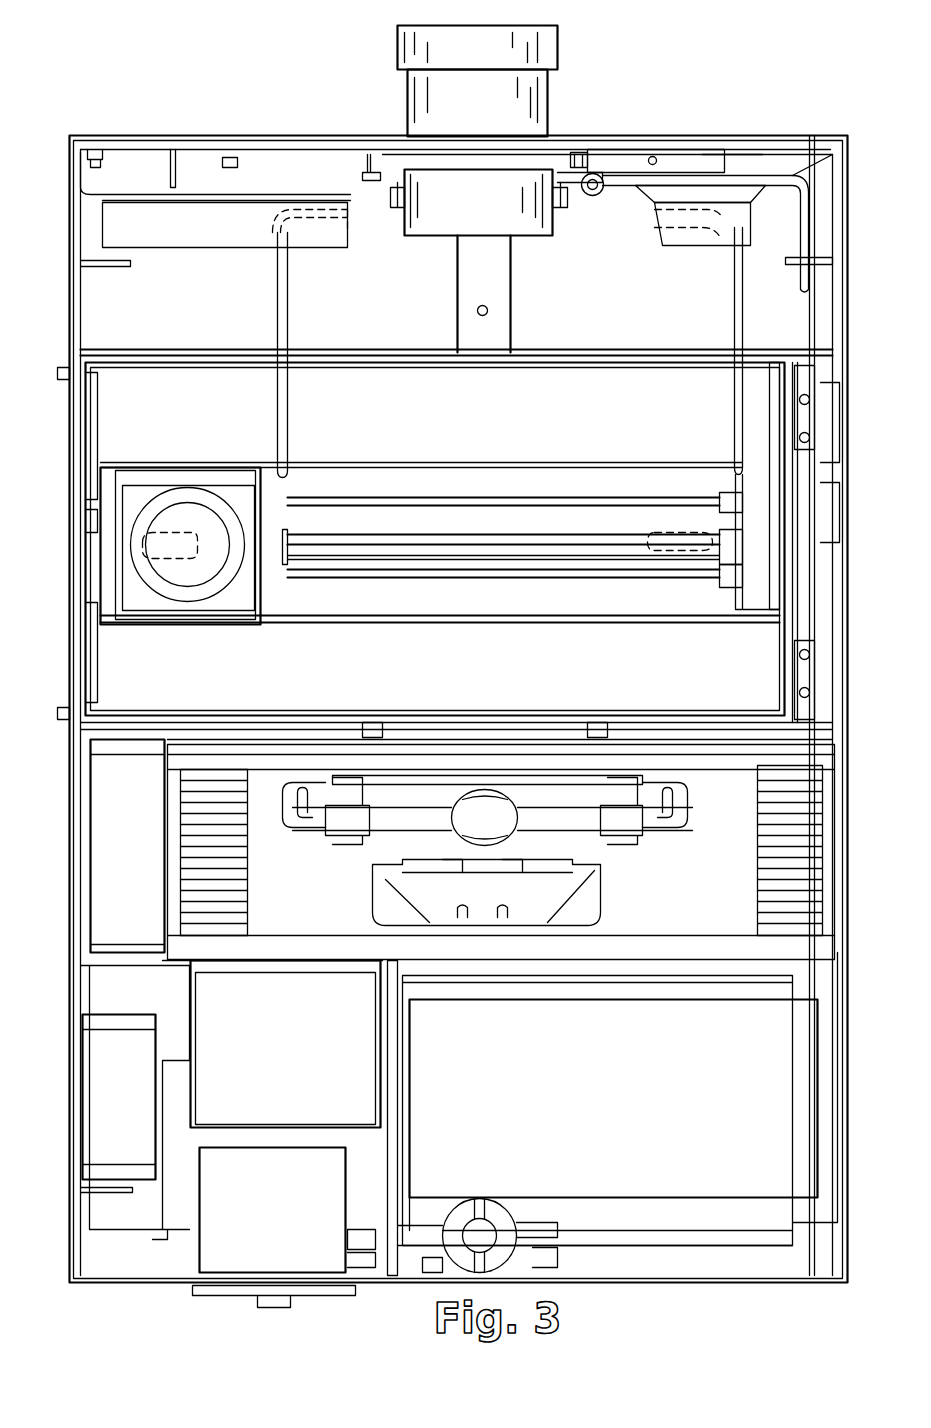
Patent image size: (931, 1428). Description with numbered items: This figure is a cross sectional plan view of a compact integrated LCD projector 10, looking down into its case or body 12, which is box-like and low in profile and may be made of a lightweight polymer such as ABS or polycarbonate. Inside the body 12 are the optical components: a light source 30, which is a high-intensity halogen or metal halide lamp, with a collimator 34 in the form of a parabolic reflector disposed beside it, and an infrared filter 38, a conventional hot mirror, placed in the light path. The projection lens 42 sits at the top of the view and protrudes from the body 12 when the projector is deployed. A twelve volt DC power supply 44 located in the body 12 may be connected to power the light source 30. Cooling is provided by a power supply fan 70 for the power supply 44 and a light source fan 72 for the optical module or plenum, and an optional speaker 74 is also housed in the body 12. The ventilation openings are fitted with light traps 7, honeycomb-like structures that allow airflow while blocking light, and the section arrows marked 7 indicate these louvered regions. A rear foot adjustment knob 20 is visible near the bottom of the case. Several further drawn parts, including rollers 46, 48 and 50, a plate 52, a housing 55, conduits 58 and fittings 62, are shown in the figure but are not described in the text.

The compact electronic projector 10 is at (772, 116).
The case or body 12 is at (70, 1035).
The rear foot adjustment knob 20 is at (490, 1200).
The light source 30 is at (488, 811).
The collimator 34 is at (562, 882).
The infrared filter 38 is at (458, 720).
The projection lens 42 is at (462, 112).
The power supply 44 is at (603, 1110).
The roller 46 is at (440, 533).
The roller 48 is at (505, 578).
The roller 50 is at (577, 497).
The plate 52 is at (572, 625).
The sensor housing 55 is at (210, 602).
The conduit 58 is at (275, 283).
The fitting 62 is at (155, 533).
The light trap 7 is at (255, 862).
The power supply fan 70 is at (103, 1112).
The light source fan 72 is at (108, 857).
The speaker 74 is at (700, 247).